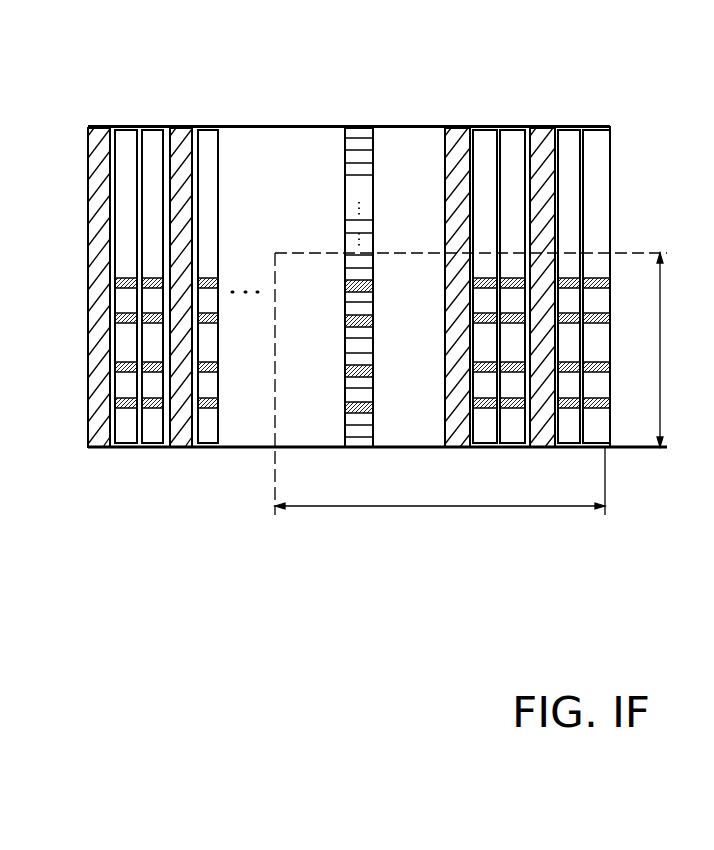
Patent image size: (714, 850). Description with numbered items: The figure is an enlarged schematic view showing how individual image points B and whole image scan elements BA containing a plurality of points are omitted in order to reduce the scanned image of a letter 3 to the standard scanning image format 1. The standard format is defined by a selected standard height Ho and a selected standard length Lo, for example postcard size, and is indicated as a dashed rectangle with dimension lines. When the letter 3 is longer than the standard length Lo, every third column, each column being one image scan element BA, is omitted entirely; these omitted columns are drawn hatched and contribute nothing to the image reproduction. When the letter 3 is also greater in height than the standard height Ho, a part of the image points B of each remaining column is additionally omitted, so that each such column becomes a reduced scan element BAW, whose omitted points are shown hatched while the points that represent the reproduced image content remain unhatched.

The scanning image format 1 is at (302, 408).
The letter 3 is at (232, 187).
The image point B is at (353, 227).
The image scan element BA is at (180, 415).
The reduced scan element BAW is at (590, 133).
The standard height Ho is at (471, 350).
The standard length Lo is at (440, 384).